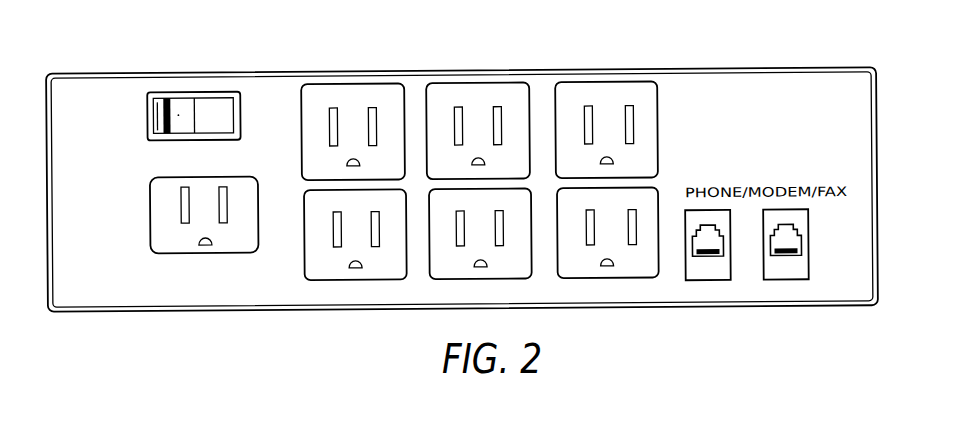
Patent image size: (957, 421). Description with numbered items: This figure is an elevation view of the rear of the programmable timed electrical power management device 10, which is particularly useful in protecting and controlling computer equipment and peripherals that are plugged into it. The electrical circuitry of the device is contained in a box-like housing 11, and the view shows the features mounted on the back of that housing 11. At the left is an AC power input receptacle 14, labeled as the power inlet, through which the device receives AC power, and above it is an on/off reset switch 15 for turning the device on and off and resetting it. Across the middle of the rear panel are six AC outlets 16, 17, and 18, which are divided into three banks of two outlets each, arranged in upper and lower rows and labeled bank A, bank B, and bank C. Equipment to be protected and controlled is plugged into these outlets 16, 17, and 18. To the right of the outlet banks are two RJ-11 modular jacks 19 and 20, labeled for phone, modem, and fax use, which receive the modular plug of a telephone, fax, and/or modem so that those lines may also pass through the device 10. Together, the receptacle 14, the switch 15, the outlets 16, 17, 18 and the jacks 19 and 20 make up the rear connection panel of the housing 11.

The programmable timed electrical power management device 10 is at (482, 56).
The housing 11 is at (704, 72).
The AC power input receptacle 14 is at (158, 203).
The on/off reset switch 15 is at (158, 109).
The AC outlets 16 is at (313, 202).
The AC outlets 17 is at (446, 95).
The AC outlets 18 is at (598, 94).
The RJ-11 modular jack 19 is at (711, 272).
The RJ-11 modular jack 20 is at (781, 270).